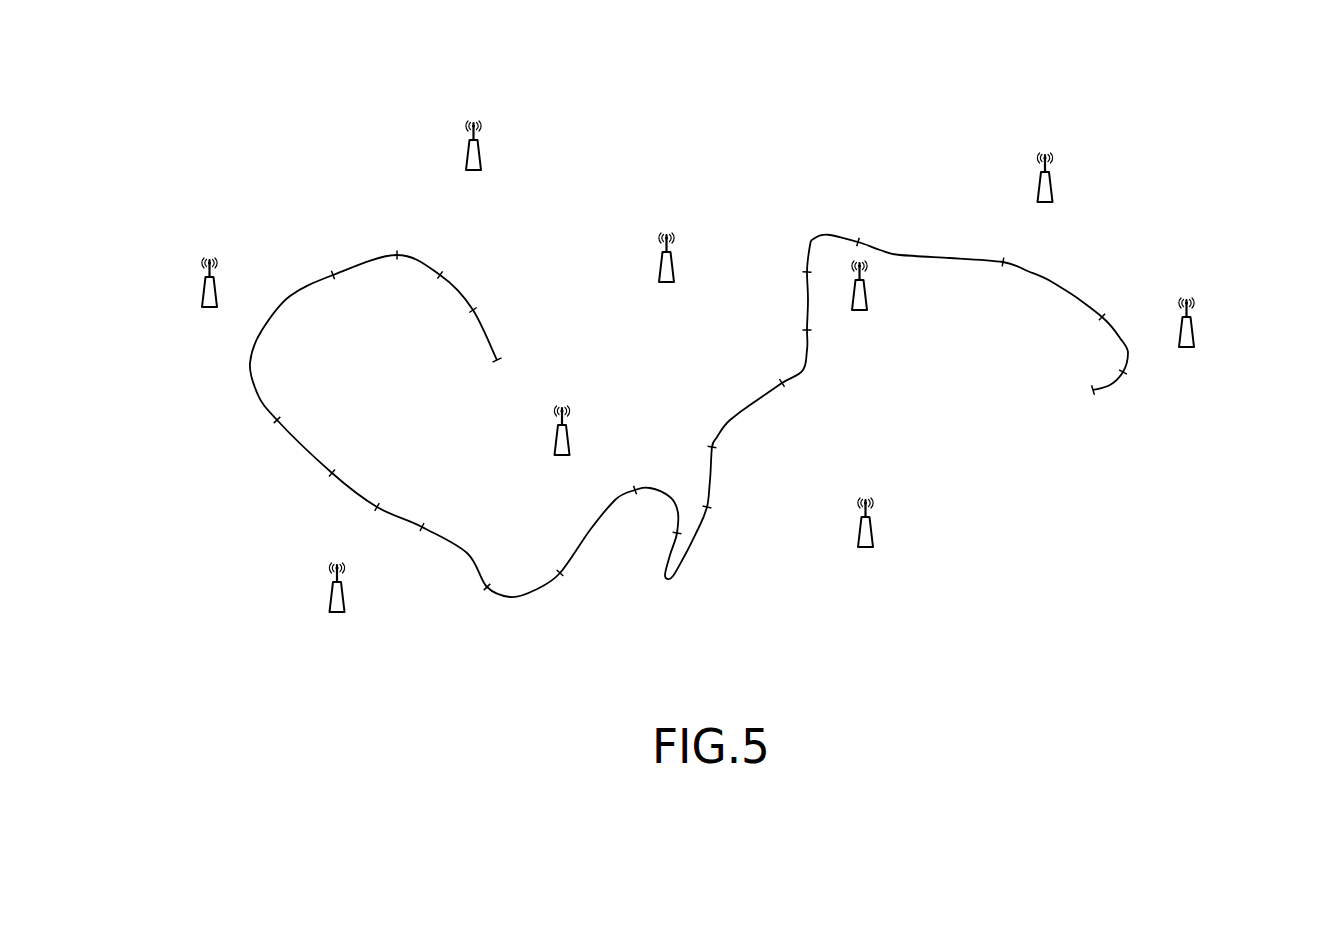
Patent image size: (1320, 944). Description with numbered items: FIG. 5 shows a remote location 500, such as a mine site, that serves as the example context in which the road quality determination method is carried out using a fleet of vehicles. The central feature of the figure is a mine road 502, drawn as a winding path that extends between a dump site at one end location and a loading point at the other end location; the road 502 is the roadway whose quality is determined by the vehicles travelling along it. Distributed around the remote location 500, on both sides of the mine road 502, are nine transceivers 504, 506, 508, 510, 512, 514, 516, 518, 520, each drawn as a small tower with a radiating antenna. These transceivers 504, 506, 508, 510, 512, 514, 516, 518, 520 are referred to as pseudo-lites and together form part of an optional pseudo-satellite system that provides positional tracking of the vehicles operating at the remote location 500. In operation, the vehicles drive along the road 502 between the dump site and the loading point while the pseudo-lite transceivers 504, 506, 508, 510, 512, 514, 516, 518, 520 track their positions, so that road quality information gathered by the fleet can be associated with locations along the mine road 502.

The remote location 500 is at (1166, 83).
The mine road 502 is at (1052, 282).
The transceiver 504 is at (485, 150).
The transceiver 506 is at (203, 288).
The transceiver 508 is at (328, 598).
The transceiver 510 is at (553, 440).
The transceiver 512 is at (660, 258).
The transceiver 514 is at (875, 528).
The transceiver 516 is at (1055, 178).
The transceiver 518 is at (869, 290).
The transceiver 520 is at (1196, 325).